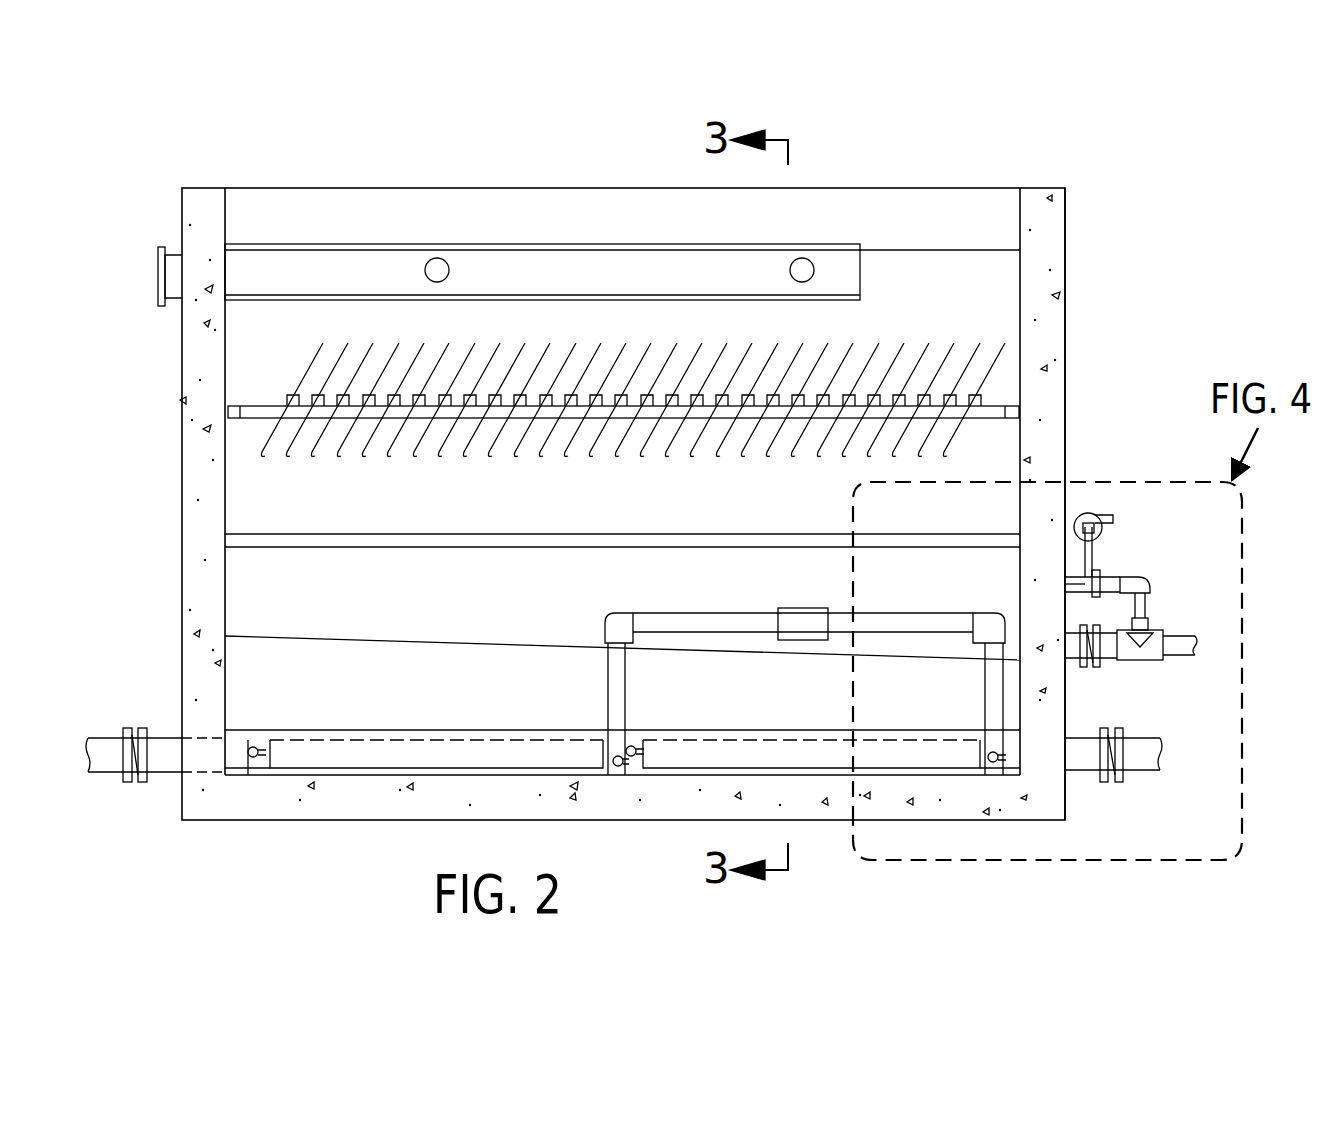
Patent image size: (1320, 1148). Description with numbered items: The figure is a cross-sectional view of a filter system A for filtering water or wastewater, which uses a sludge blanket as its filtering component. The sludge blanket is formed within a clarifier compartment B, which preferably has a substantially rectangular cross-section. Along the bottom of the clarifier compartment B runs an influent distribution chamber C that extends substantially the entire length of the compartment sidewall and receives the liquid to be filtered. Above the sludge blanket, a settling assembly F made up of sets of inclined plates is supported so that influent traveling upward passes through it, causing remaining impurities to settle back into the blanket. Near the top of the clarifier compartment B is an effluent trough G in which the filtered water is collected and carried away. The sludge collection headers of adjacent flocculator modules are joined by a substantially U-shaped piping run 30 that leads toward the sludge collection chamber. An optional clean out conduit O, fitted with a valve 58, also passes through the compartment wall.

The filter system A is at (1139, 194).
The clarifier compartment B is at (1048, 348).
The effluent trough G is at (328, 265).
The settling assembly F is at (405, 475).
The influent distribution chamber C is at (375, 695).
The clean out conduit O is at (104, 758).
The valve 58 is at (131, 709).
The U-shaped piping run 30 is at (711, 622).